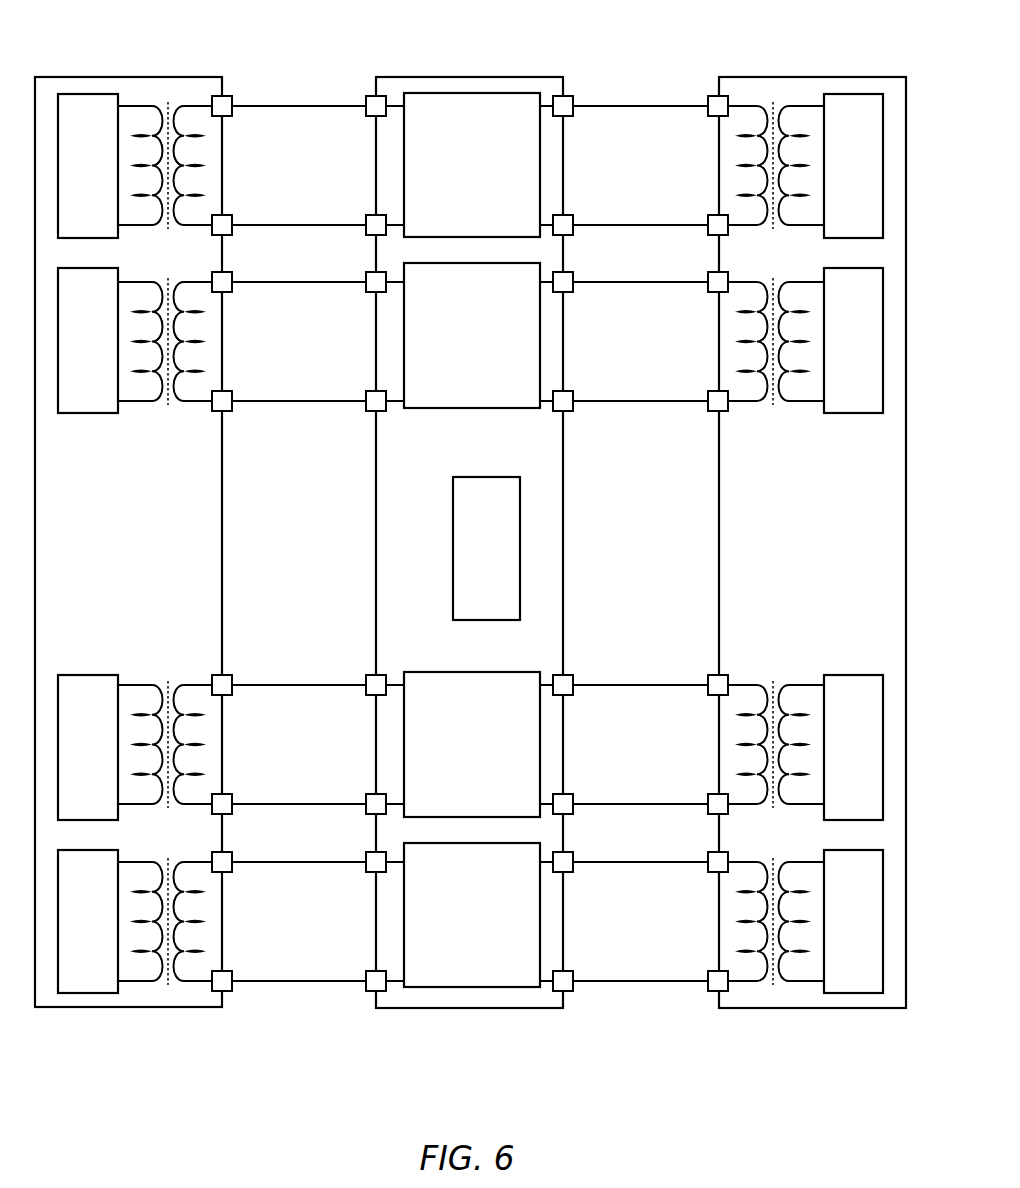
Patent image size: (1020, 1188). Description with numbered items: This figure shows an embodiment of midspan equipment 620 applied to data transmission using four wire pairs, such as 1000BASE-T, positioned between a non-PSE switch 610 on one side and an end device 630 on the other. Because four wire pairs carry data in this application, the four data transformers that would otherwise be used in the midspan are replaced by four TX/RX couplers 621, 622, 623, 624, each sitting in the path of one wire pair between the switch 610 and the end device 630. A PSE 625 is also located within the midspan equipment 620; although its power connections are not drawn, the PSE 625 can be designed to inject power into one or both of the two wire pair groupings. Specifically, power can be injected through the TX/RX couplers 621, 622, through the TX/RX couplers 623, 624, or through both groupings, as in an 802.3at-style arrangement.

The non-PSE switch 610 is at (130, 77).
The midspan equipment 620 is at (473, 77).
The end device 630 is at (805, 77).
The TX/RX coupler 621 is at (404, 93).
The TX/RX coupler 622 is at (440, 408).
The TX/RX coupler 623 is at (442, 672).
The TX/RX coupler 624 is at (408, 987).
The PSE 625 is at (453, 567).